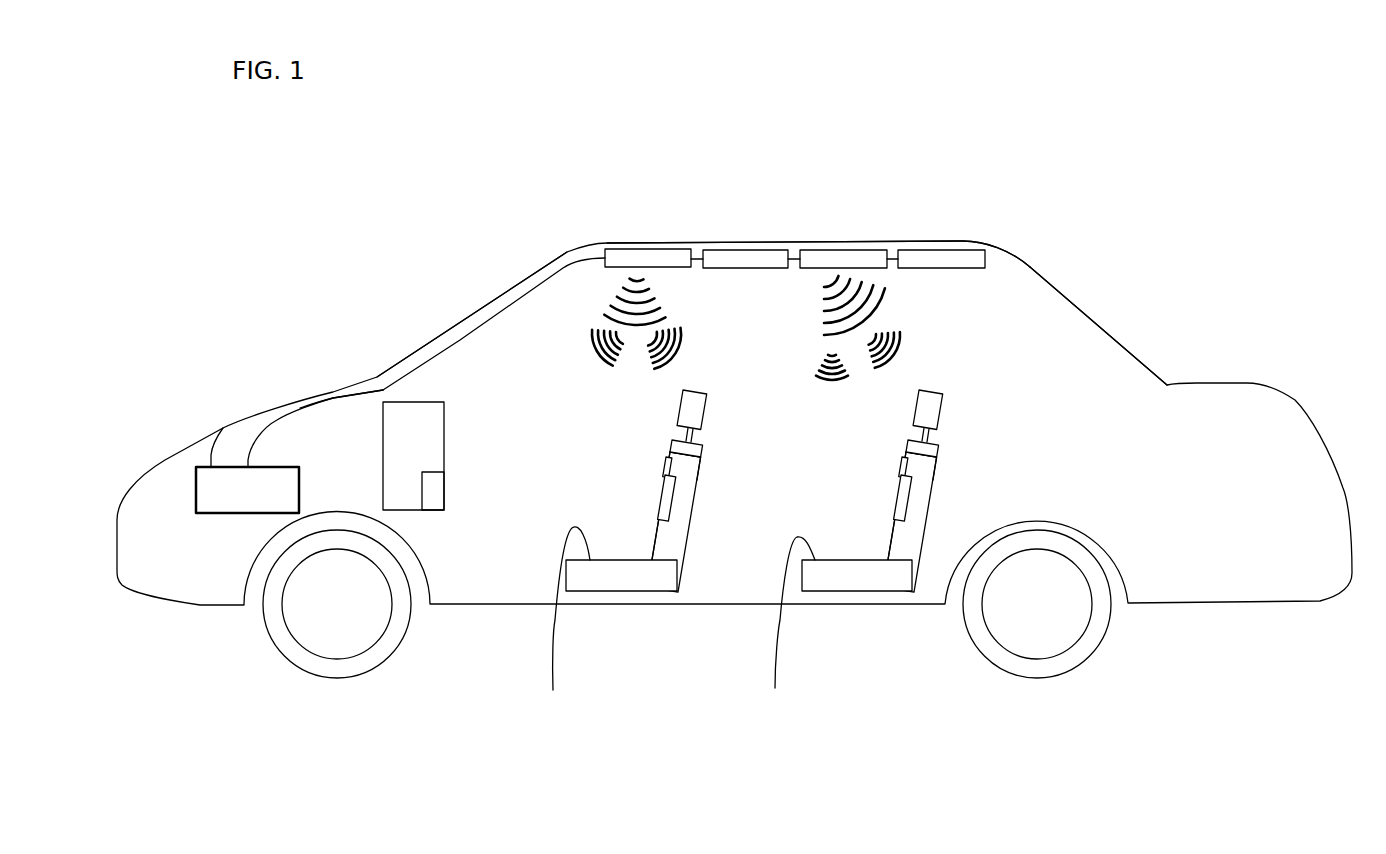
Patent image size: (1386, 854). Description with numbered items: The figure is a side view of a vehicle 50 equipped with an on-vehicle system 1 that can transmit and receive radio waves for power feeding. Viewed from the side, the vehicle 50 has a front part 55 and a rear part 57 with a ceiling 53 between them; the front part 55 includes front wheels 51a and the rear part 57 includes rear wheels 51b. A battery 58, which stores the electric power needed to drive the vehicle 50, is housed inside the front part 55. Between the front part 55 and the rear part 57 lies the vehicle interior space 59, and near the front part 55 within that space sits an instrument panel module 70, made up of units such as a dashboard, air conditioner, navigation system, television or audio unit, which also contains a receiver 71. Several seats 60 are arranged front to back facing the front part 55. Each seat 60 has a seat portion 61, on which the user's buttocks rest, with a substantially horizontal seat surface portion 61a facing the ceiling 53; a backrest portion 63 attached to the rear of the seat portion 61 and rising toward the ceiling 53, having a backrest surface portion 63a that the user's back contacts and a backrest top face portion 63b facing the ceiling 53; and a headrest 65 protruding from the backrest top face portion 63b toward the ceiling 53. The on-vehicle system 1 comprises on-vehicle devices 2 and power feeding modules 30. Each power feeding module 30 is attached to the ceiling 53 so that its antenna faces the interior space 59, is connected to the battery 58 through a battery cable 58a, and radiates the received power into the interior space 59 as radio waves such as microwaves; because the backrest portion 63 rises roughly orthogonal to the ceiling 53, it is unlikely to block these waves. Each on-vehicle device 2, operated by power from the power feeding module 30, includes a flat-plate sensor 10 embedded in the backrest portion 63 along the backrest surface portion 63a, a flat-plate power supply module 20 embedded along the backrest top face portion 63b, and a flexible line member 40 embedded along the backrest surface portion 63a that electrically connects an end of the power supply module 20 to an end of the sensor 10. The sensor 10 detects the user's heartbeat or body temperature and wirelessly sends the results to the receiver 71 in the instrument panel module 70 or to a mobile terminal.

The on-vehicle system 1 is at (786, 182).
The on-vehicle device 2 is at (761, 531).
The sensor 10 is at (771, 492).
The power supply module 20 is at (697, 450).
The power feeding module 30 is at (738, 248).
The line member 40 is at (668, 460).
The vehicle 50 is at (1260, 682).
The front wheels 51a is at (330, 647).
The rear wheels 51b is at (1042, 640).
The ceiling 53 is at (967, 240).
The front part 55 is at (260, 413).
The rear part 57 is at (1107, 327).
The battery 58 is at (223, 428).
The battery cable 58a is at (327, 395).
The vehicle interior space 59 is at (498, 345).
The seat 60 is at (761, 531).
The seat portion 61 is at (628, 592).
The seat surface portion 61a is at (679, 620).
The backrest portion 63 is at (675, 545).
The backrest surface portion 63a is at (652, 547).
The backrest top face portion 63b is at (700, 476).
The headrest 65 is at (695, 390).
The instrument panel module 70 is at (444, 415).
The receiver 71 is at (434, 497).